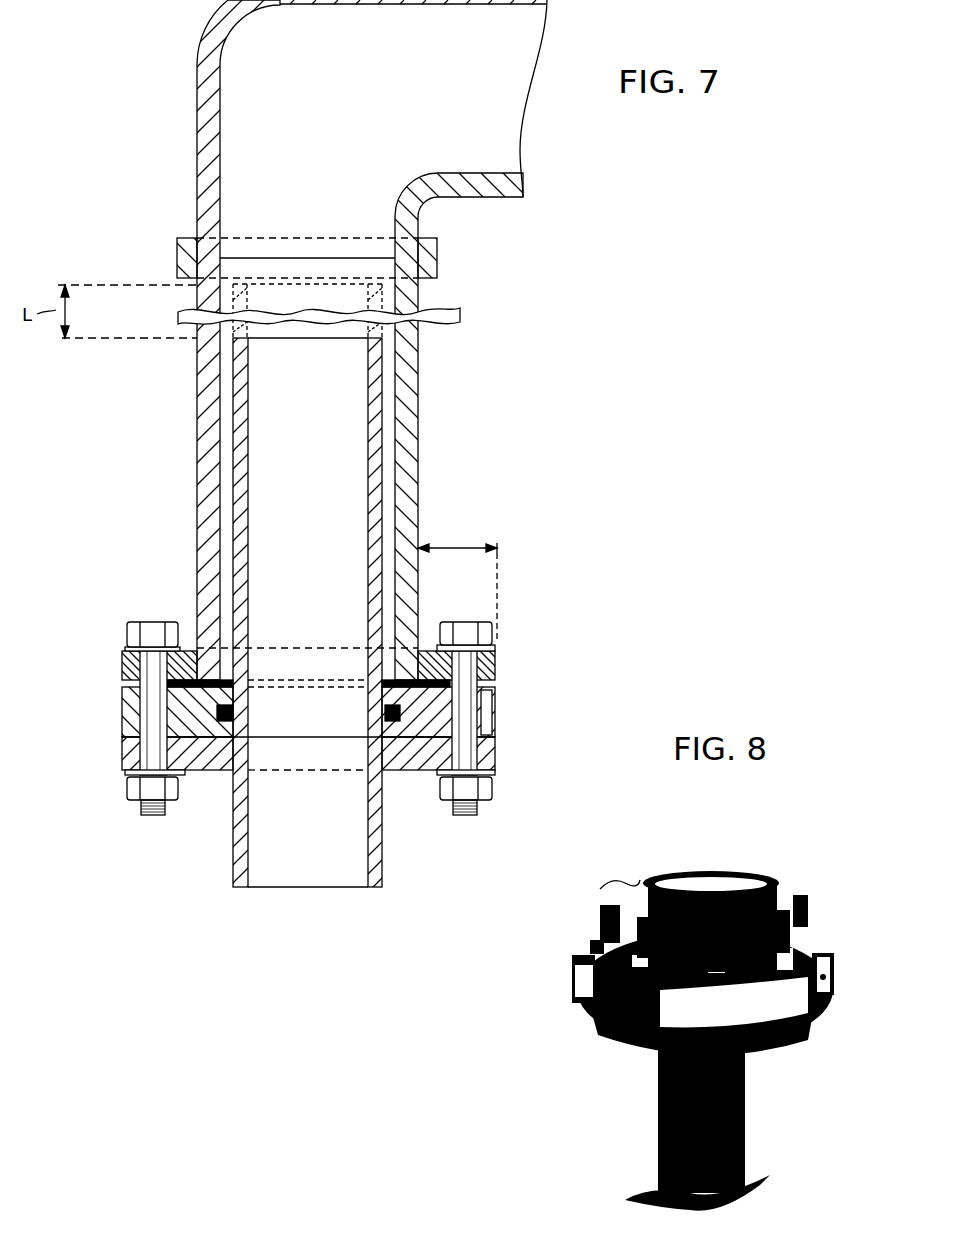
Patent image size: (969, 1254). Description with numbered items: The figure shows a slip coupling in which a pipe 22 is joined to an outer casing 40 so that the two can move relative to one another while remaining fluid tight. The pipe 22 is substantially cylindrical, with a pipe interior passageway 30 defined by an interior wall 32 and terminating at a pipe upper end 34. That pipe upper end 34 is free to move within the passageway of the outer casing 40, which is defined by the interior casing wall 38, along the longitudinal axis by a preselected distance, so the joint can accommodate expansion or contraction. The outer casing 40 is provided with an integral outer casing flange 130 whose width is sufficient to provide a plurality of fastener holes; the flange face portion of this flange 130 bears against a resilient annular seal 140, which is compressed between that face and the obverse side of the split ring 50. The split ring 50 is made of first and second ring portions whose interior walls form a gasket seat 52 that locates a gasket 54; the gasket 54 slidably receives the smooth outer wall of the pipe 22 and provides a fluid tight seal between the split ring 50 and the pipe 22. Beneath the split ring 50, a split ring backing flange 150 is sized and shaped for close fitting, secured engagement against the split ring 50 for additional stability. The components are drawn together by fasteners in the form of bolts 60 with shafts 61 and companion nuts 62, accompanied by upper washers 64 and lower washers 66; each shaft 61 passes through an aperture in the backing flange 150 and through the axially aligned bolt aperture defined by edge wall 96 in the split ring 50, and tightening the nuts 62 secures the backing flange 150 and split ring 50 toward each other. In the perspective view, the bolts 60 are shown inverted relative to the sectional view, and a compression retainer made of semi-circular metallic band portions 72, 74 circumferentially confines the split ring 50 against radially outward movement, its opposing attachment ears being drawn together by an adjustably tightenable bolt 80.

In FIG. 8, the pipe 22 is at (745, 1133).
In FIG. 7, the pipe interior passageway 30 is at (367, 423).
In FIG. 7, the interior wall 32 is at (366, 403).
In FIG. 7, the pipe upper end 34 is at (397, 327).
In FIG. 7, the interior casing wall 38 is at (396, 478).
In FIG. 7, the outer casing 40 is at (413, 442).
In FIG. 8, the outer casing 40 is at (772, 882).
In FIG. 7, the split ring 50 is at (550, 688).
In FIG. 7, the gasket seat 52 is at (432, 737).
In FIG. 7, the gasket 54 is at (222, 712).
In FIG. 7, the bolt 60 is at (148, 631).
In FIG. 8, the bolt 60 is at (642, 1052).
In FIG. 7, the shaft 61 is at (153, 698).
In FIG. 7, the nut 62 is at (137, 788).
In FIG. 8, the nut 62 is at (600, 933).
In FIG. 7, the upper washer 64 is at (125, 648).
In FIG. 7, the lower washer 66 is at (123, 773).
In FIG. 8, the lower washer 66 is at (590, 950).
In FIG. 7, the semi-circular metallic band portion 72 is at (123, 727).
In FIG. 8, the semi-circular metallic band portion 72 is at (773, 1040).
In FIG. 7, the semi-circular metallic band portion 74 is at (497, 715).
In FIG. 8, the bolt 80 is at (572, 995).
In FIG. 7, the edge wall 96 is at (167, 710).
In FIG. 7, the integral outer casing flange 130 is at (125, 668).
In FIG. 8, the integral outer casing flange 130 is at (823, 948).
In FIG. 7, the resilient annular seal 140 is at (203, 683).
In FIG. 7, the split ring backing flange 150 is at (123, 750).
In FIG. 8, the split ring backing flange 150 is at (612, 1033).